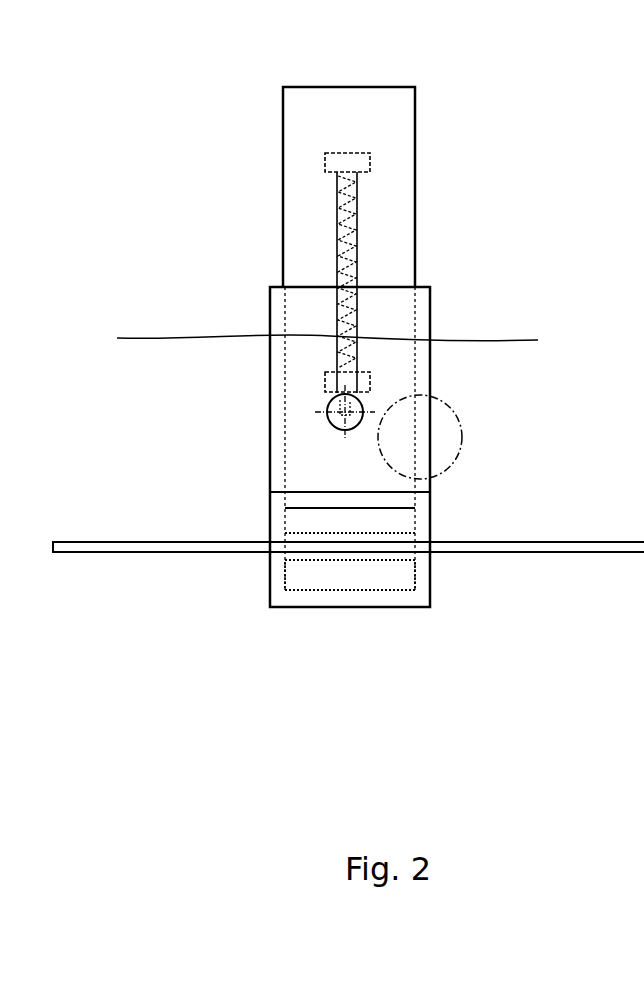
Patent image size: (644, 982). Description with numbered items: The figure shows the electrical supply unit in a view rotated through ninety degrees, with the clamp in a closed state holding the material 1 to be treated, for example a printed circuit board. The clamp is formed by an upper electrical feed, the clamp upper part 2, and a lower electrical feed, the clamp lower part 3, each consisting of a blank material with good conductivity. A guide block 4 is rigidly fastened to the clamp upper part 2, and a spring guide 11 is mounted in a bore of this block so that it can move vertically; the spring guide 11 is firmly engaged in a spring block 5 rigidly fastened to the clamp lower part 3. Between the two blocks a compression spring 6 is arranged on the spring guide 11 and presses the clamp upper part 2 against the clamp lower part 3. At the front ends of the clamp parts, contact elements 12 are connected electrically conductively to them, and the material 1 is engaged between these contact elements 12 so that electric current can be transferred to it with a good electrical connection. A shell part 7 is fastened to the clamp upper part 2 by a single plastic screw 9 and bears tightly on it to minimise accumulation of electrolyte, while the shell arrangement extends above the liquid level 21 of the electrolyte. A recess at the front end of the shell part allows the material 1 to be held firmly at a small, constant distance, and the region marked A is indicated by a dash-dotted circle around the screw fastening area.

The material to be treated 1 is at (178, 547).
The clamp upper part 2 is at (297, 165).
The clamp lower part 3 is at (397, 577).
The guide block 4 is at (333, 385).
The spring block 5 is at (352, 160).
The compression spring 6 is at (340, 250).
The shell part 7 is at (330, 460).
The plastic screw 9 is at (361, 401).
The spring guide 11 is at (357, 242).
The contact elements 12 is at (320, 532).
The liquid level 21 is at (190, 335).
The detail region A is at (462, 425).